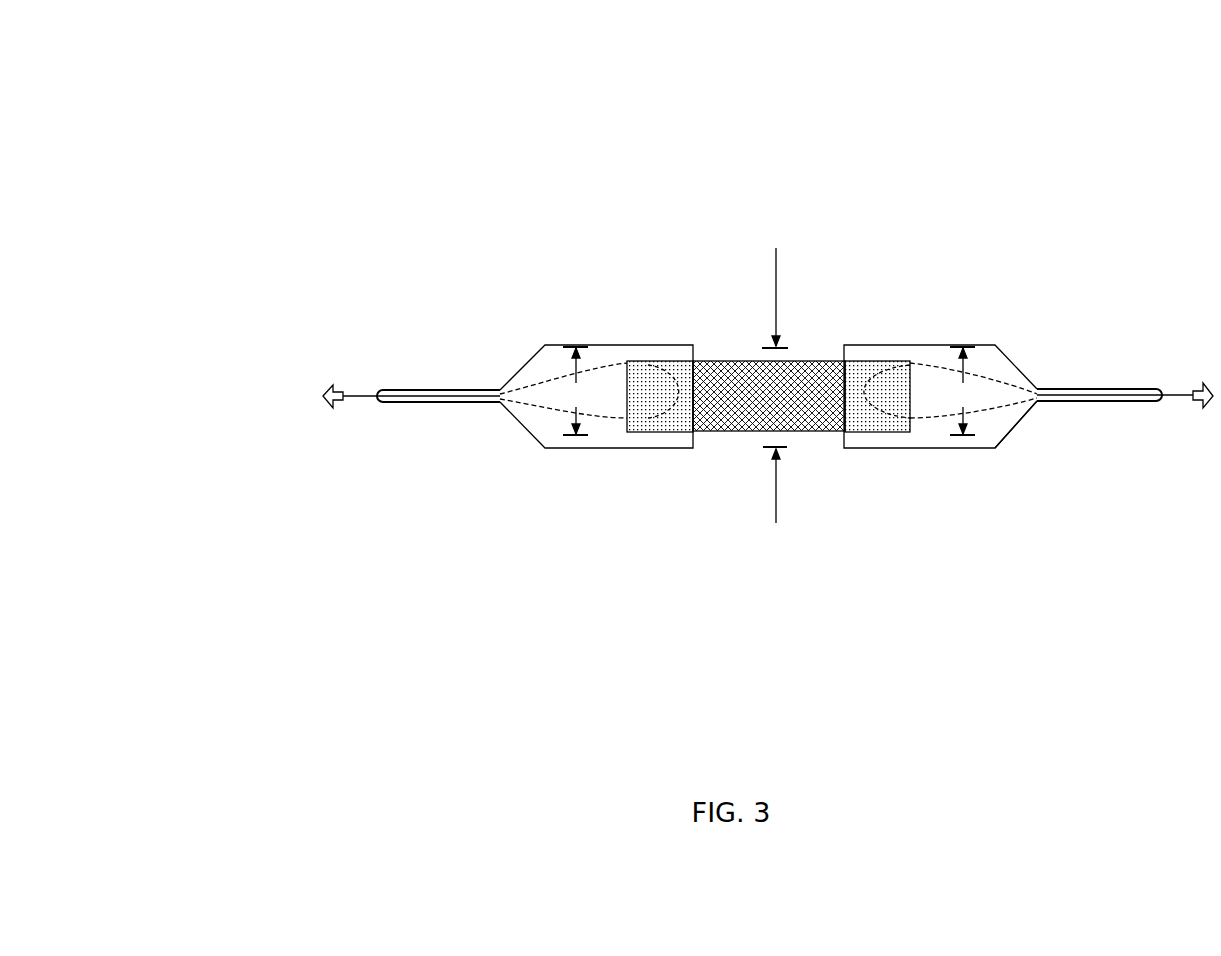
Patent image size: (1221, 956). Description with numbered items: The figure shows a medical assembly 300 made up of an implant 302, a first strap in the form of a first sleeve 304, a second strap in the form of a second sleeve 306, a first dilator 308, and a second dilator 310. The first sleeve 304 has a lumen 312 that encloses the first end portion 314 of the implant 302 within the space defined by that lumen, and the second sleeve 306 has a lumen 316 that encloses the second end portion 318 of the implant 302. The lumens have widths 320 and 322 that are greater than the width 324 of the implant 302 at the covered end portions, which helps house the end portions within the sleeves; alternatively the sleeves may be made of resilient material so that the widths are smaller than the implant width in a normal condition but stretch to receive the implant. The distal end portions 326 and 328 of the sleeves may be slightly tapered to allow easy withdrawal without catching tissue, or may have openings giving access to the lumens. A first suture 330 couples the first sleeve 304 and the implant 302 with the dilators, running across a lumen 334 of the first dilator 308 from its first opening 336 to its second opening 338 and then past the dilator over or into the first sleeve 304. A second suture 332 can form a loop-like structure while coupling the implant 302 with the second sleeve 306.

The medical assembly 300 is at (242, 158).
The implant 302 is at (737, 432).
The first sleeve 304 is at (613, 347).
The second sleeve 306 is at (913, 347).
The first dilator 308 is at (413, 388).
The second dilator 310 is at (1123, 388).
The lumen 312 is at (612, 437).
The first end portion 314 is at (675, 362).
The lumen 316 is at (988, 360).
The second end portion 318 is at (885, 432).
The width 320 is at (581, 391).
The width 322 is at (969, 391).
The width 324 is at (781, 371).
The distal end portion 326 is at (525, 373).
The distal end portion 328 is at (1010, 433).
The first suture 330 is at (400, 400).
The second suture 332 is at (1175, 398).
The lumen 334 is at (463, 400).
The first opening 336 is at (377, 390).
The second opening 338 is at (498, 388).